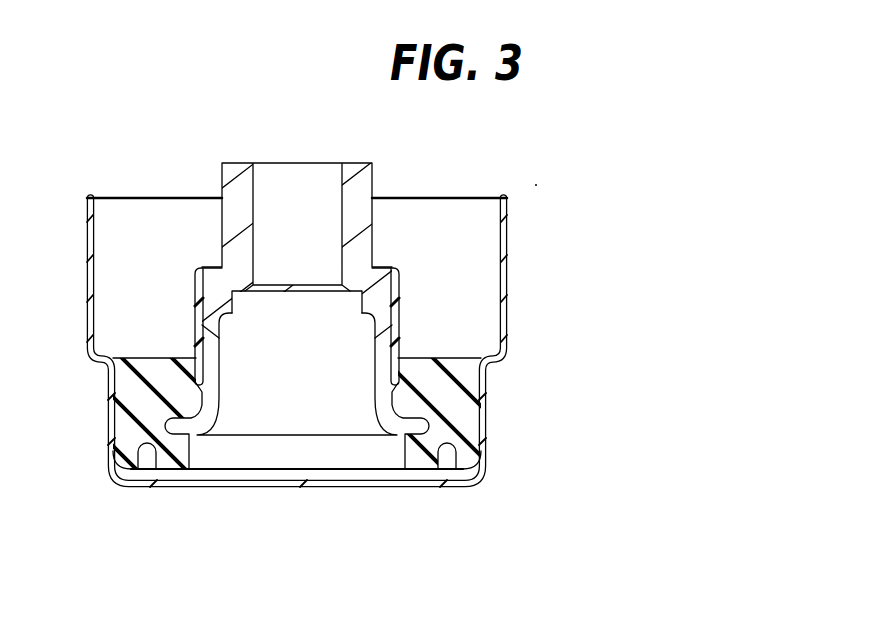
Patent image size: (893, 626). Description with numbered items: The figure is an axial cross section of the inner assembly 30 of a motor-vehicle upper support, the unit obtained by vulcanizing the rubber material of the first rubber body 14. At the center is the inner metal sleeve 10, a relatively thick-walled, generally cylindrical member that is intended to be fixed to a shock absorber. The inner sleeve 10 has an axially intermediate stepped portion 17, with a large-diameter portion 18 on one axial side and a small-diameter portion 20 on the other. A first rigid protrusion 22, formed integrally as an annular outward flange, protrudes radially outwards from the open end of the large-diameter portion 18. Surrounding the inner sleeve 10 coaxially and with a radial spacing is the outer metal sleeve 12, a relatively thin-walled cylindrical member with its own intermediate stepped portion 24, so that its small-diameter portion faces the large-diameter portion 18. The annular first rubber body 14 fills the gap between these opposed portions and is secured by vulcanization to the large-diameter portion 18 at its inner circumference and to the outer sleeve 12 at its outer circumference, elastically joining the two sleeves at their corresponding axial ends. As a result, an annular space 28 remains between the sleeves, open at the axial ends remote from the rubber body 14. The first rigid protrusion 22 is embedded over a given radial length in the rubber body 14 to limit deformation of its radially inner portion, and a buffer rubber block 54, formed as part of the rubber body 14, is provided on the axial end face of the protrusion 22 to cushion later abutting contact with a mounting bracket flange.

The inner metal sleeve 10 is at (384, 212).
The outer metal sleeve 12 is at (516, 267).
The first rubber body 14 is at (468, 427).
The stepped portion 17 is at (378, 294).
The large-diameter portion 18 is at (212, 341).
The small-diameter portion 20 is at (235, 214).
The first rigid protrusion 22 is at (182, 425).
The stepped portion 24 is at (97, 366).
The annular space 28 is at (503, 321).
The inner assembly 30 is at (108, 128).
The buffer rubber block 54 is at (414, 466).